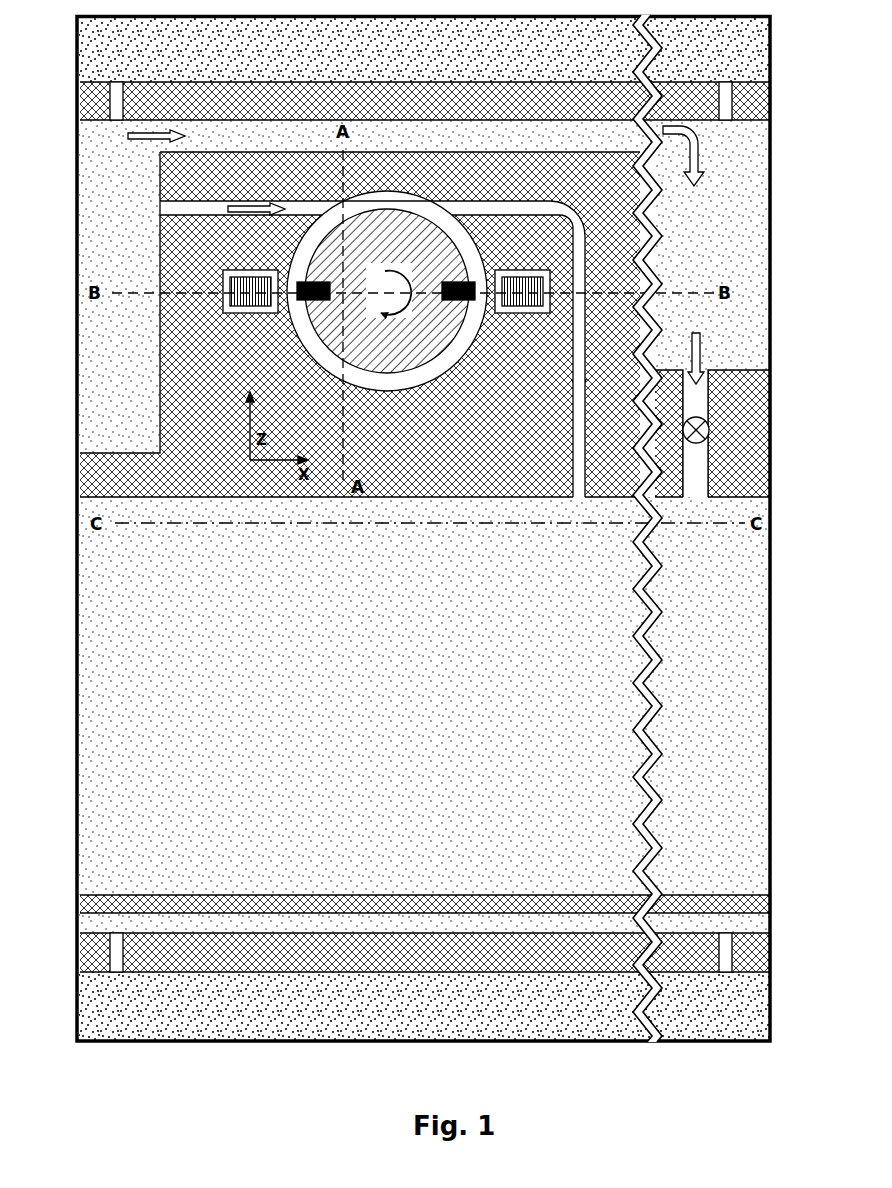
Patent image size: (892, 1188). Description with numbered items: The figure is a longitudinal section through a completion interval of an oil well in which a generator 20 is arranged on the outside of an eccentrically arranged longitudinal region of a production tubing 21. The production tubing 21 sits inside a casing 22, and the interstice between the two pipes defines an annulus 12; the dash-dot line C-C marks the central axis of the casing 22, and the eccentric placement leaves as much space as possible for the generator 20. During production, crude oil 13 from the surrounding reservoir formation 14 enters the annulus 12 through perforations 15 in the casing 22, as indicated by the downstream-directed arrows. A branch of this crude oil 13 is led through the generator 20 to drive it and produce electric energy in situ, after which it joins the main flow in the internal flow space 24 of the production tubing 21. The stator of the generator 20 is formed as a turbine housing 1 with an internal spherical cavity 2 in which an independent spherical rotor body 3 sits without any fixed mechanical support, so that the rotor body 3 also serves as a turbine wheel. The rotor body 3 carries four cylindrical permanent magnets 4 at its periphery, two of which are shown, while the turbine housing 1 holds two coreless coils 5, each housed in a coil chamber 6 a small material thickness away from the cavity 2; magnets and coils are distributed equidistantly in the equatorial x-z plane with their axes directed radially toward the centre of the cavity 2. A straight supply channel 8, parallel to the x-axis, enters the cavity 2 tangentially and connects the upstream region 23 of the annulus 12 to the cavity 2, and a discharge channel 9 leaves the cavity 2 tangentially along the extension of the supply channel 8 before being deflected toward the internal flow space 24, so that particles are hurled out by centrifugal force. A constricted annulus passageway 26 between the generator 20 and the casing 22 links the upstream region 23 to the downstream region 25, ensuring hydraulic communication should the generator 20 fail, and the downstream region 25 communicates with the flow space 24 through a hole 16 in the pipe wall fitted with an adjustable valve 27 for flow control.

The turbine housing 1 is at (203, 377).
The spherical cavity 2 is at (463, 238).
The rotor body 3 is at (452, 318).
The permanent magnets 4 is at (453, 285).
The coreless coils 5 is at (240, 305).
The coil chamber 6 is at (273, 313).
The supply channel 8 is at (213, 210).
The discharge channel 9 is at (508, 212).
The annulus 12 is at (118, 250).
The crude oil 13 is at (395, 206).
The reservoir formation 14 is at (448, 56).
The perforations 15 is at (117, 100).
The hole 16 is at (693, 480).
The generator 20 is at (258, 140).
The production tubing 21 is at (101, 480).
The casing 22 is at (358, 92).
The upstream region 23 is at (141, 195).
The internal flow space 24 is at (120, 700).
The downstream region 25 is at (698, 171).
The annulus passageway 26 is at (432, 128).
The adjustable valve 27 is at (700, 425).